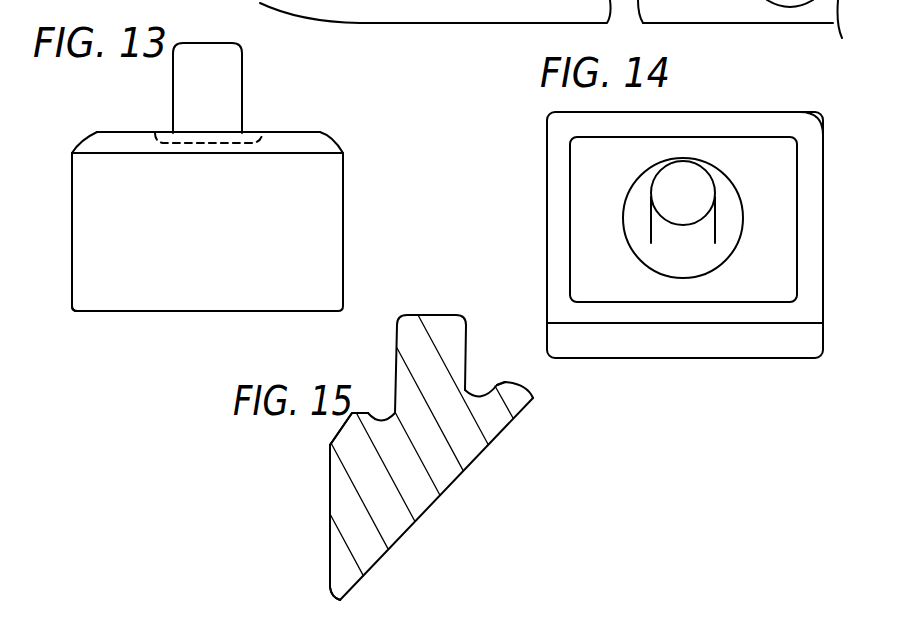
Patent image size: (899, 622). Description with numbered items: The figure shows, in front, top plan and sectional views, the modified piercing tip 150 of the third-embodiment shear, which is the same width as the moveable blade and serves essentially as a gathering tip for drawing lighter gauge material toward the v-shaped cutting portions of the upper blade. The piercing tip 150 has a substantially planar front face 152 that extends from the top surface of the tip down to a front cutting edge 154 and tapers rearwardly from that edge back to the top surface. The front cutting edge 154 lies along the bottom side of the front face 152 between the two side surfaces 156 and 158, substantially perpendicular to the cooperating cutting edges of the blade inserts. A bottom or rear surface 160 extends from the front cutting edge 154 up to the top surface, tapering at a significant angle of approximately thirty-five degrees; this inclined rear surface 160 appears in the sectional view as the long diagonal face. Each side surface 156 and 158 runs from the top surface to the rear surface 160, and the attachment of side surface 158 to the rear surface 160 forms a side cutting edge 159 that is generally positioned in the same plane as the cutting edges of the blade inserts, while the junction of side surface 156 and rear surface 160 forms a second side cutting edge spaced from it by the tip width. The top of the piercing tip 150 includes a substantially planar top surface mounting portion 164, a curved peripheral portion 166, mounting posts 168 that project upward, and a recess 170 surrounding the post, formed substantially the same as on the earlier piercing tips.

In FIG. 13, the piercing tip 150 is at (104, 115).
In FIG. 14, the piercing tip 150 is at (723, 99).
In FIG. 15, the piercing tip 150 is at (429, 298).
In FIG. 13, the front face 152 is at (280, 215).
In FIG. 14, the front face 152 is at (705, 356).
In FIG. 15, the front face 152 is at (330, 512).
In FIG. 13, the front cutting edge 154 is at (277, 312).
In FIG. 15, the front cutting edge 154 is at (333, 600).
In FIG. 13, the side surface 156 is at (345, 182).
In FIG. 13, the side surface 158 is at (72, 193).
In FIG. 13, the side cutting edge 159 is at (75, 312).
In FIG. 15, the rear surface 160 is at (465, 473).
In FIG. 13, the top surface mounting portion 164 is at (293, 130).
In FIG. 14, the top surface mounting portion 164 is at (772, 178).
In FIG. 15, the top surface mounting portion 164 is at (490, 383).
In FIG. 13, the curved peripheral portion 166 is at (322, 142).
In FIG. 14, the curved peripheral portion 166 is at (787, 122).
In FIG. 15, the curved peripheral portion 166 is at (343, 428).
In FIG. 13, the mounting posts 168 is at (182, 69).
In FIG. 14, the mounting posts 168 is at (695, 202).
In FIG. 15, the mounting posts 168 is at (442, 327).
In FIG. 13, the recess 170 is at (253, 137).
In FIG. 14, the recess 170 is at (732, 233).
In FIG. 15, the recess 170 is at (381, 412).